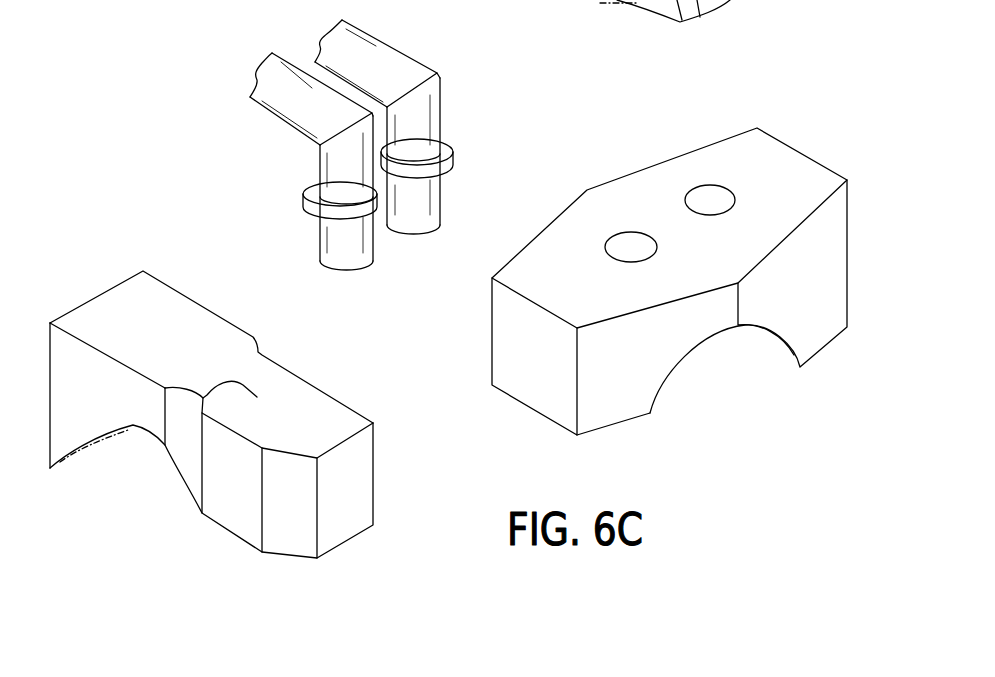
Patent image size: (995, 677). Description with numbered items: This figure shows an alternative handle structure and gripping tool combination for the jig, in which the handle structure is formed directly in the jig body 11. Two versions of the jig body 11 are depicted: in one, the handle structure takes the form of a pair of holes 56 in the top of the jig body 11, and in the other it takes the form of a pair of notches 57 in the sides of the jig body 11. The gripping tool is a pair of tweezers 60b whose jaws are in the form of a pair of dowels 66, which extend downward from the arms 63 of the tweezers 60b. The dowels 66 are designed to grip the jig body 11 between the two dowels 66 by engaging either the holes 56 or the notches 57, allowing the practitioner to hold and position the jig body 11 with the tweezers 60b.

The jig body 11 is at (448, 321).
The holes 56 is at (688, 212).
The notches 57 is at (257, 355).
The tweezers 60b is at (434, 187).
The flange arm 63 is at (272, 55).
The dowels 66 is at (690, 187).